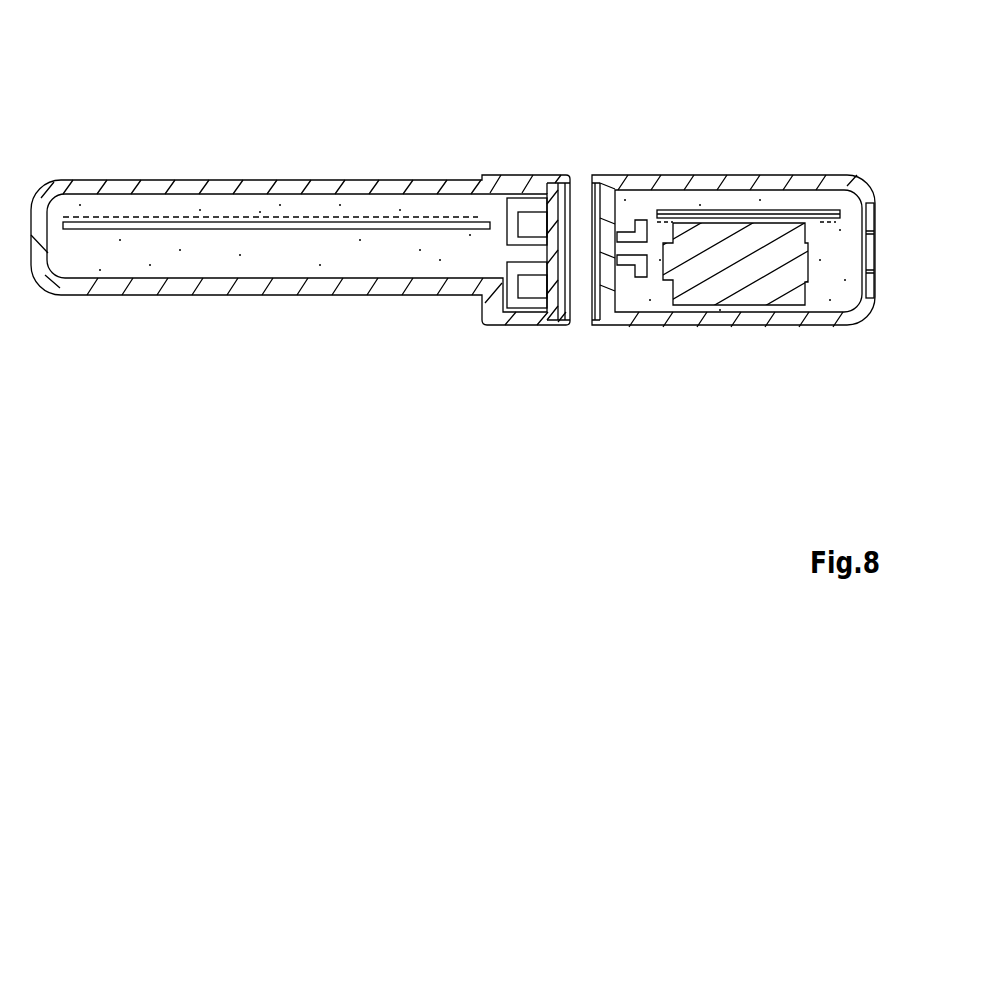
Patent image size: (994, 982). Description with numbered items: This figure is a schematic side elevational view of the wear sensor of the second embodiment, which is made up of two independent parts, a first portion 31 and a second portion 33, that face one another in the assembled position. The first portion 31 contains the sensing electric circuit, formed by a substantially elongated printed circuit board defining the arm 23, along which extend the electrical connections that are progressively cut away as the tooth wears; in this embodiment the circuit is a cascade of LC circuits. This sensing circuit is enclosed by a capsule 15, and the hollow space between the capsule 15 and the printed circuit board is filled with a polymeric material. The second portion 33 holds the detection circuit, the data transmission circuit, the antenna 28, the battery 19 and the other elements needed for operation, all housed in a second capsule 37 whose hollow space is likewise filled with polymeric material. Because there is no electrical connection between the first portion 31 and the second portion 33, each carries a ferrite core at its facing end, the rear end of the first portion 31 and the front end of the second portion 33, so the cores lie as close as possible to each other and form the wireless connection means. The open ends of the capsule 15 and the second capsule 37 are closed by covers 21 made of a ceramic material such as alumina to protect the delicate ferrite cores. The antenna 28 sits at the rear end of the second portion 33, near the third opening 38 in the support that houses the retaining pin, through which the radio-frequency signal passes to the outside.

The capsule 15 is at (83, 183).
The battery 19 is at (690, 252).
The covers 21 is at (599, 205).
The arm 23 is at (312, 222).
The antenna 28 is at (834, 211).
The first portion 31 is at (195, 248).
The second portion 33 is at (831, 296).
The second capsule 37 is at (745, 183).
The third opening 38 is at (867, 262).